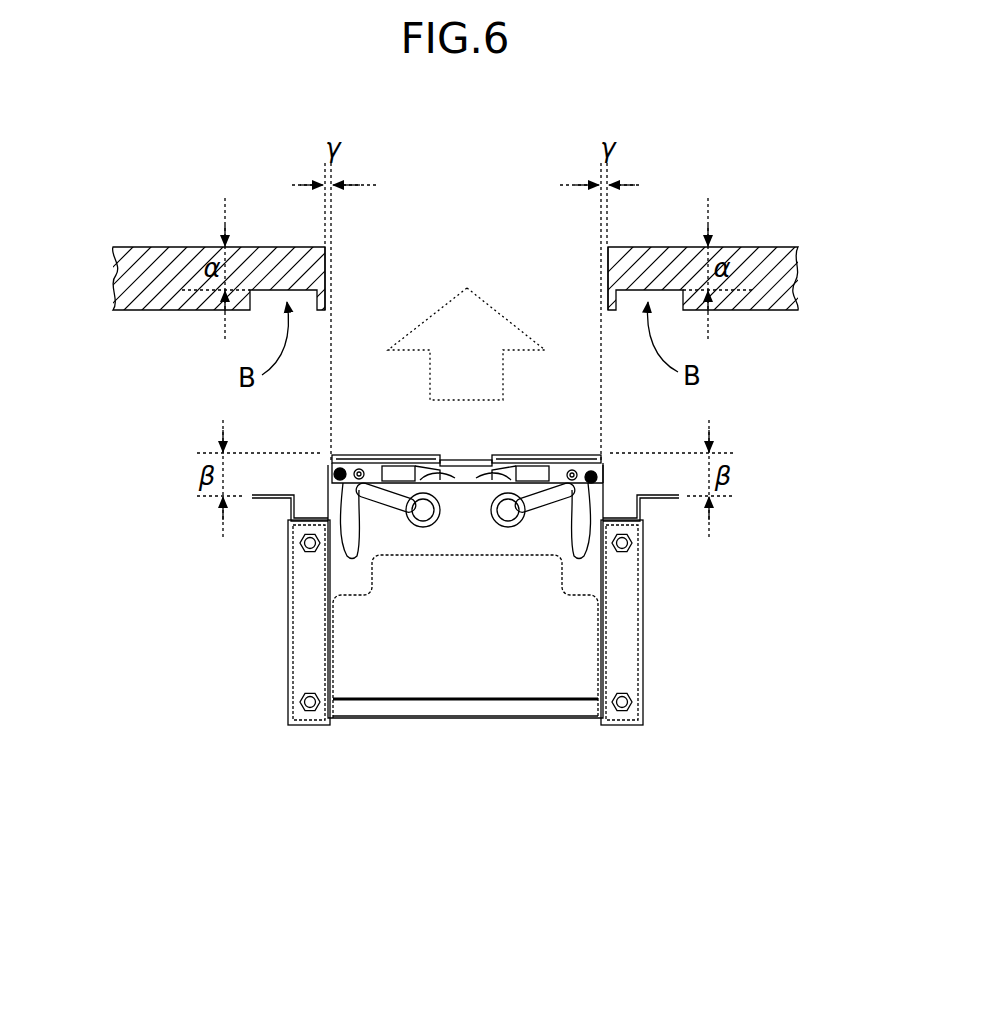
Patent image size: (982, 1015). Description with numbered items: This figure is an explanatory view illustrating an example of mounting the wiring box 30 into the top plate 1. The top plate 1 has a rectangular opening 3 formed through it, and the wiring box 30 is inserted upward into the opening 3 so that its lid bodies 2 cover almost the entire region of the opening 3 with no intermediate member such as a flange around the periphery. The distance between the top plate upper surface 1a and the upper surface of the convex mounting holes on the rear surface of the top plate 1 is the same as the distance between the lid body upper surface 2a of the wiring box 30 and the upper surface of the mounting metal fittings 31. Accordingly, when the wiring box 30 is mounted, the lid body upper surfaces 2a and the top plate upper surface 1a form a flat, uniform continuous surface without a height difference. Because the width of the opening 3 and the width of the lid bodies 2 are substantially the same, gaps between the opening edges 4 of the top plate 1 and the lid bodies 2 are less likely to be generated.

The top plate 1 is at (163, 247).
The top plate upper surface 1a is at (127, 247).
The lid body 2 is at (392, 455).
The lid body upper surface 2a is at (420, 455).
The opening 3 is at (472, 260).
The opening edge 4 is at (325, 247).
The wiring box 30 is at (482, 721).
The mounting metal fitting 31 is at (268, 499).